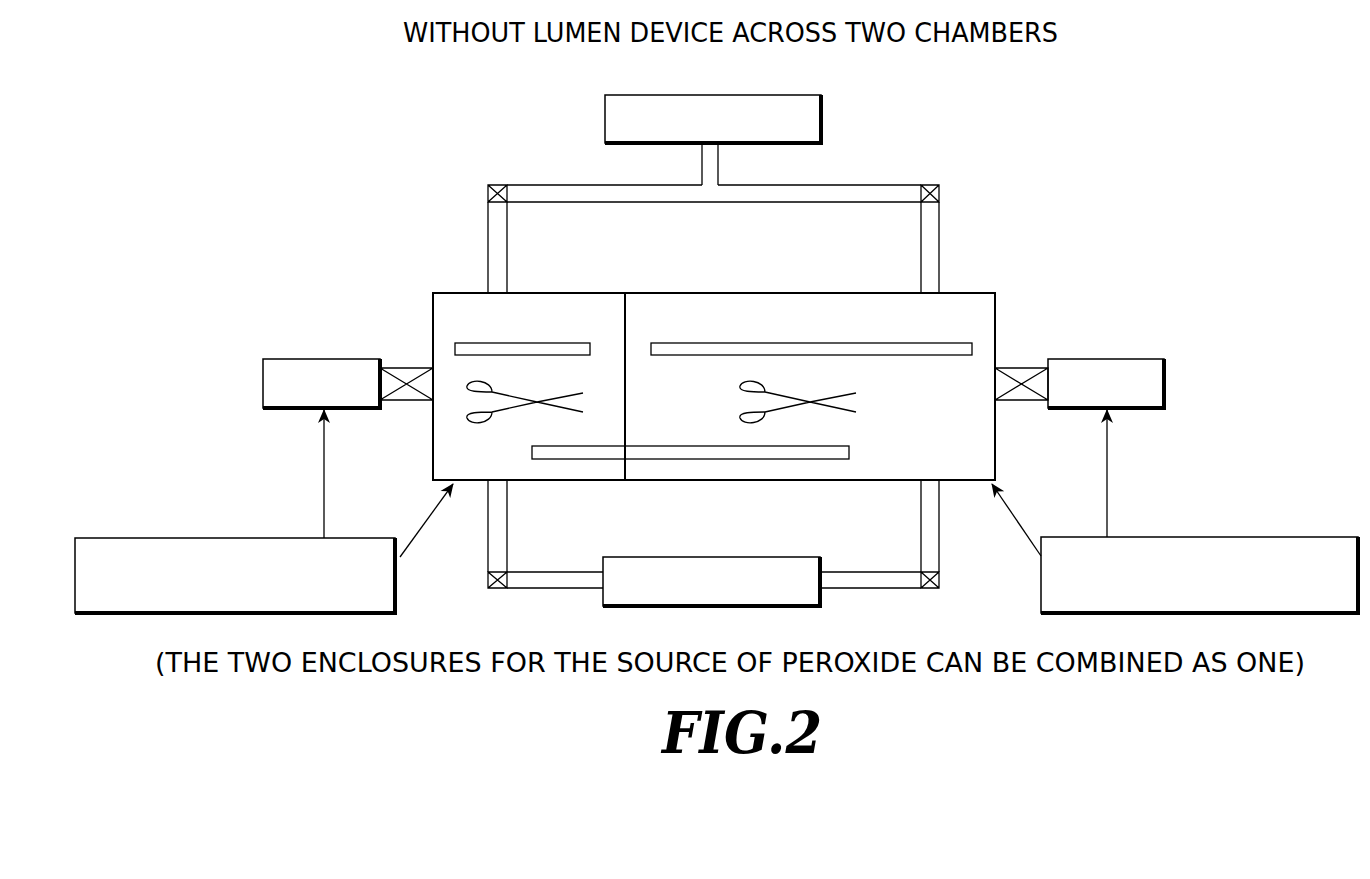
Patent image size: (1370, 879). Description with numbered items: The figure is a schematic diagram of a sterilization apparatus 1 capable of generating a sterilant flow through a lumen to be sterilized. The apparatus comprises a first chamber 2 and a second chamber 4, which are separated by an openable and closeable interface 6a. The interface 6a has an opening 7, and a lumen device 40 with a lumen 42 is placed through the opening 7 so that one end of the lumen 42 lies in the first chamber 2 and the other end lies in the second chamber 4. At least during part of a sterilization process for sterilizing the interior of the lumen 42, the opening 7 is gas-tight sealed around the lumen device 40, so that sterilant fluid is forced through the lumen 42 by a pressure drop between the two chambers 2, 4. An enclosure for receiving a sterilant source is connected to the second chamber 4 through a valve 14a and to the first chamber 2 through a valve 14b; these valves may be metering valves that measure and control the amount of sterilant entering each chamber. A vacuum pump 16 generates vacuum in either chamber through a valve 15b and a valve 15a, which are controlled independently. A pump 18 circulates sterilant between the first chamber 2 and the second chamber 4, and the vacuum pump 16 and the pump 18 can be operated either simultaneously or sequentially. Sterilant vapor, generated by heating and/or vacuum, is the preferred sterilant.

The sterilization system 1 is at (992, 256).
The first chamber 2 is at (811, 330).
The second chamber 4 is at (522, 330).
The interface 6a is at (625, 391).
The opening 7 is at (626, 446).
The valve 14a is at (403, 367).
The valve 14b is at (1014, 367).
The valve 15a is at (497, 184).
The valve 15b is at (932, 184).
The vacuum pump 16 is at (655, 93).
The pump 18 is at (711, 581).
The lumen device 40 is at (803, 446).
The lumen 42 is at (849, 453).